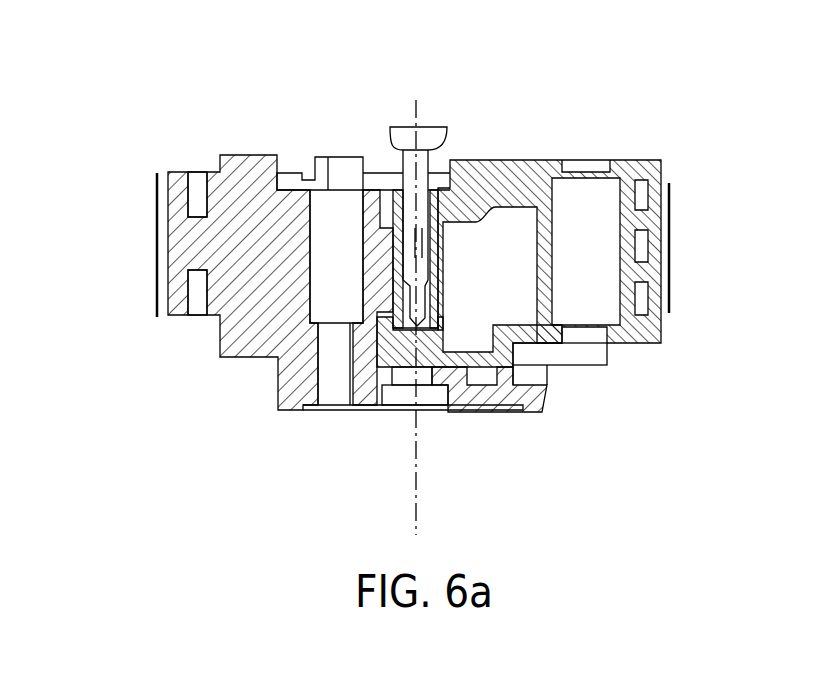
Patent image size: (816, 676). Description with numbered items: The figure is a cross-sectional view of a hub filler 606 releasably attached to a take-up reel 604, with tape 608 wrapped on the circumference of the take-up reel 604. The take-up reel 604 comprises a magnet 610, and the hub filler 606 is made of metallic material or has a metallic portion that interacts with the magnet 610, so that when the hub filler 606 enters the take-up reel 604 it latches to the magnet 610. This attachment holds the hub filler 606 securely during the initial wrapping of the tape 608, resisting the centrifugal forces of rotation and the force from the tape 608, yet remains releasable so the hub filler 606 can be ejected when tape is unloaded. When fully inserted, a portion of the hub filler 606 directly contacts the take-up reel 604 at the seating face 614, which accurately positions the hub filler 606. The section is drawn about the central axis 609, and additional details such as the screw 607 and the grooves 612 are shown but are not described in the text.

The take-up reel 604 is at (222, 355).
The hub filler 606 is at (532, 185).
The adjustment screw 607 is at (423, 247).
The tape 608 is at (157, 247).
The central axis 609 is at (417, 520).
The magnet 610 is at (372, 308).
The seal grooves 612 is at (167, 217).
The seating face 614 is at (380, 192).